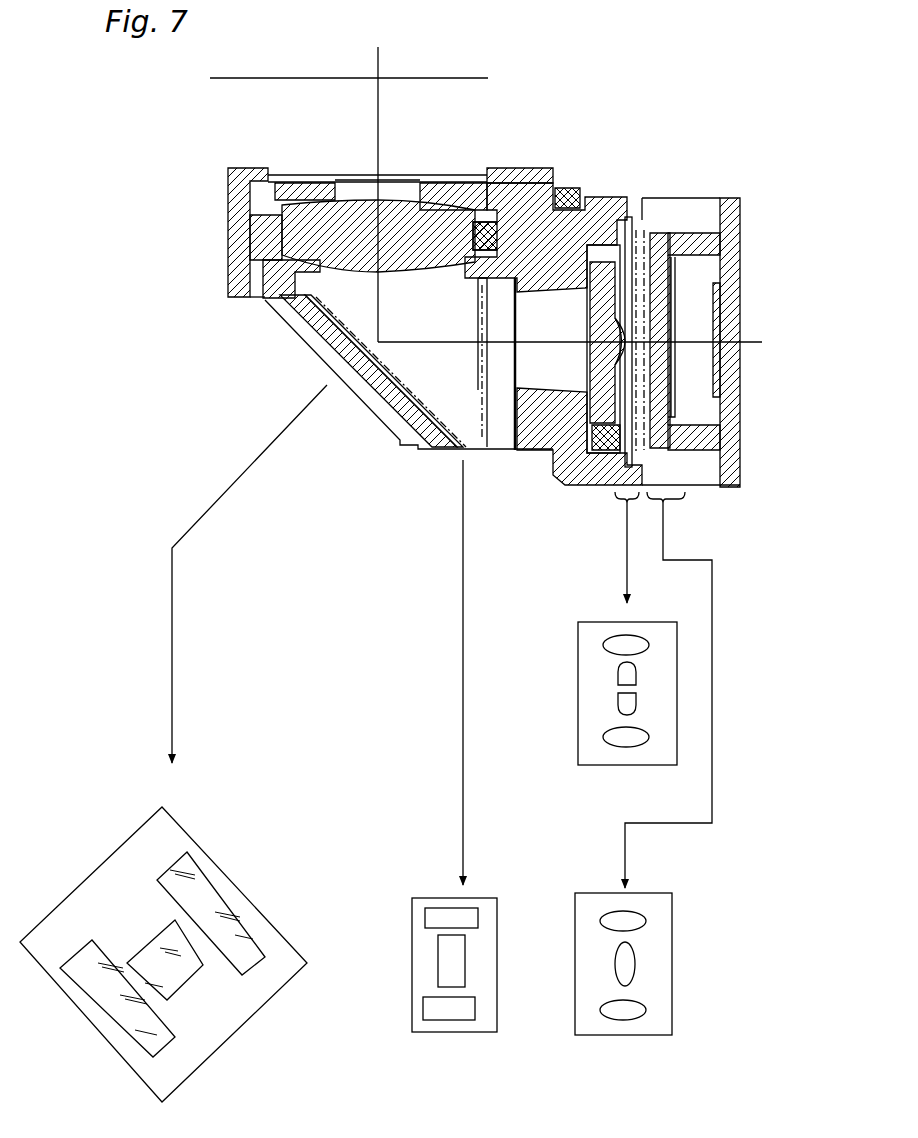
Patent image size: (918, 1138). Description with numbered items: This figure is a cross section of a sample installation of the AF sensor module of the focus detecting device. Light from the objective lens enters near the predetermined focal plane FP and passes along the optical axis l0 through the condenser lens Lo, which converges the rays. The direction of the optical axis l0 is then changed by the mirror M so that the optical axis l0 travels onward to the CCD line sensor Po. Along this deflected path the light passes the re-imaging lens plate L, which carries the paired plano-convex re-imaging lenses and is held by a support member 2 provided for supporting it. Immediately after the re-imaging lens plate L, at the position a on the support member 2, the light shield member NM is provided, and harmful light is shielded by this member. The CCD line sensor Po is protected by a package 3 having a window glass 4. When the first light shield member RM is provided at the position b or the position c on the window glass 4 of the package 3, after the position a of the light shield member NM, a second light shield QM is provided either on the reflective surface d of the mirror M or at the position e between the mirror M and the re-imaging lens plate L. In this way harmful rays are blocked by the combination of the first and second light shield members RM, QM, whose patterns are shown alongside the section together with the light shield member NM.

The support member 2 is at (603, 212).
The position immediately after re-imaging lens plate a is at (630, 217).
The first position on window glass b is at (645, 233).
The window glass 4 is at (658, 233).
The second position on window glass c is at (673, 243).
The package 3 is at (693, 230).
The CCD line sensor Po is at (717, 288).
The re-imaging lens plate L is at (590, 295).
The condenser lens Lo is at (358, 203).
The position between mirror and re-imaging lens plate e is at (478, 292).
The reflective surface of mirror d is at (443, 394).
The mirror M is at (216, 884).
The light shield member NM is at (585, 651).
The second light shield member QM is at (175, 833).
The first light shield member RM is at (668, 944).
The predetermined focal plane FP is at (488, 78).
The optical axis l0 is at (573, 190).